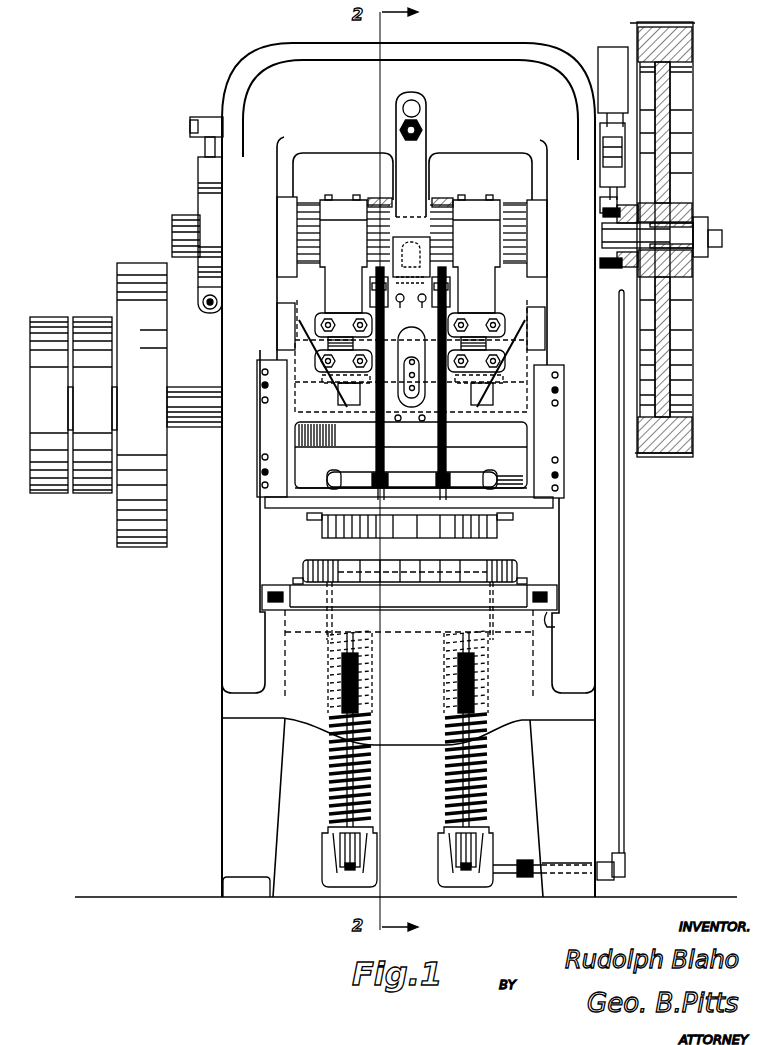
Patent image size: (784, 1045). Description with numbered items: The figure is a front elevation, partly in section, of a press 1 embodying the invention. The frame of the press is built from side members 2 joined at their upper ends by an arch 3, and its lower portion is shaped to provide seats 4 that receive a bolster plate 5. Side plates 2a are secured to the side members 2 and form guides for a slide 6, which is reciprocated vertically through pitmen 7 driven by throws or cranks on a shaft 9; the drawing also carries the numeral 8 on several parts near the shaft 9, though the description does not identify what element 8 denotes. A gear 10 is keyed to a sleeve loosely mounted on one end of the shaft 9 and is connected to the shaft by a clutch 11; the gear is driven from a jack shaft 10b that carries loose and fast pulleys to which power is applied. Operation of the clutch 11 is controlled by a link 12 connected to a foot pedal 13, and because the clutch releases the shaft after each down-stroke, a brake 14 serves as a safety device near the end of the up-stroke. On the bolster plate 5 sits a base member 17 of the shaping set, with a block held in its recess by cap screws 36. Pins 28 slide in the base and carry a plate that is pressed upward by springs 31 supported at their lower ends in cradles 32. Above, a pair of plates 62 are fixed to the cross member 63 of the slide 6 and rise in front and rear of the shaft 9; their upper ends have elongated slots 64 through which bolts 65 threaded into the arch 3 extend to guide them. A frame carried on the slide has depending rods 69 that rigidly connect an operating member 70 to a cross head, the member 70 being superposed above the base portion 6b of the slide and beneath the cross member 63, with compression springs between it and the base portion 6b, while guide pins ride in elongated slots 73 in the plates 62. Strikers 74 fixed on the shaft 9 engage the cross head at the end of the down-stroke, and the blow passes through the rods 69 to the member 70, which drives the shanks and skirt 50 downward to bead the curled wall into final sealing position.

The press 1 is at (210, 740).
The side members 2 is at (233, 450).
The side plates 2a is at (591, 446).
The arch 3 is at (507, 53).
The seats 4 is at (555, 628).
The bolster plate 5 is at (515, 607).
The slide 6 is at (532, 347).
The base portion 6b is at (525, 500).
The pitmen 7 is at (493, 343).
The bearing blocks 8 is at (350, 213).
The shaft 9 is at (187, 237).
The gear 10 is at (685, 145).
The jack shaft 10b is at (188, 398).
The clutch 11 is at (603, 277).
The link 12 is at (624, 558).
The foot pedal 13 is at (510, 875).
The brake 14 is at (200, 197).
The base member 17 is at (507, 565).
The pins 28 is at (490, 615).
The springs 31 is at (443, 777).
The cradles 32 is at (450, 874).
The cap screws 36 is at (417, 623).
The skirt 50 is at (412, 469).
The plates 62 is at (415, 177).
The cross member 63 is at (422, 415).
The elongated slots 64 is at (425, 110).
The bolts 65 is at (424, 128).
The rods 69 is at (447, 437).
The operating member 70 is at (467, 475).
The elongated slots 73 is at (423, 303).
The strikers 74 is at (373, 200).